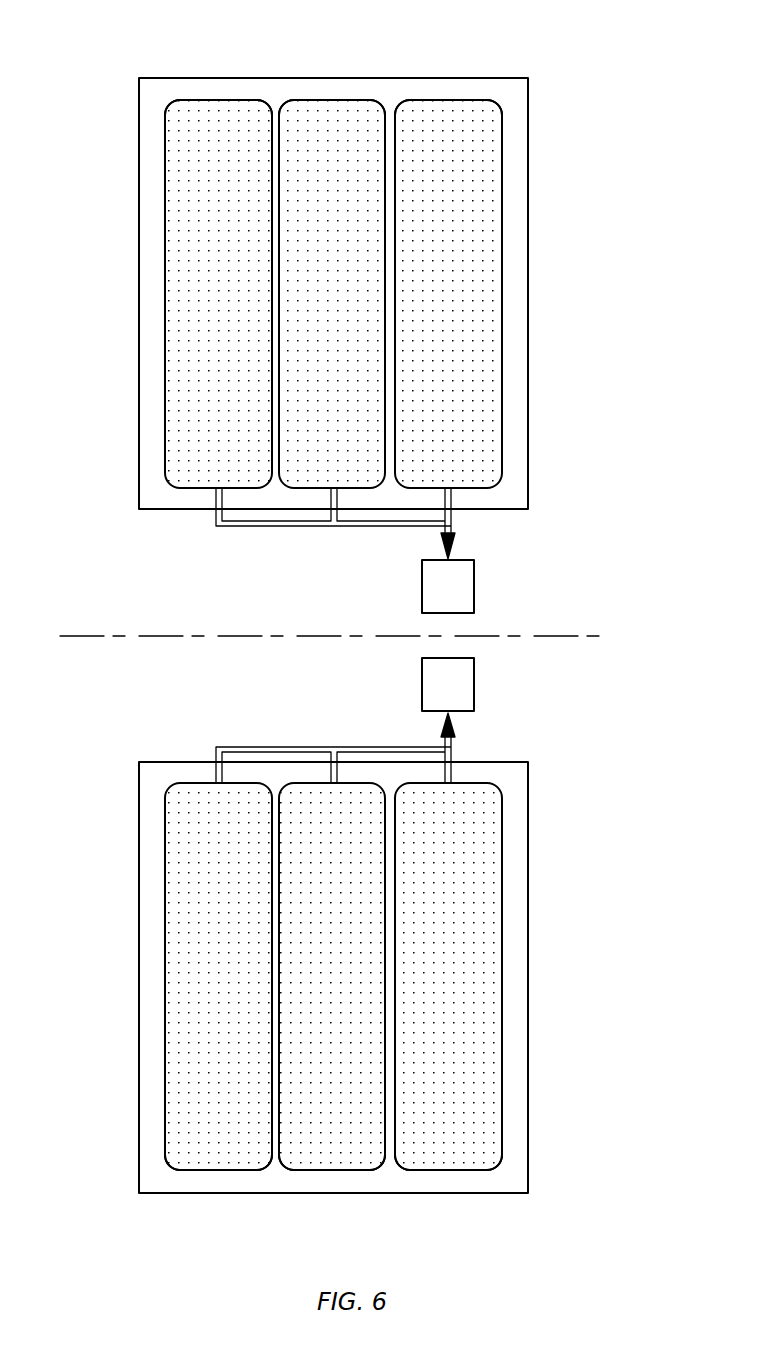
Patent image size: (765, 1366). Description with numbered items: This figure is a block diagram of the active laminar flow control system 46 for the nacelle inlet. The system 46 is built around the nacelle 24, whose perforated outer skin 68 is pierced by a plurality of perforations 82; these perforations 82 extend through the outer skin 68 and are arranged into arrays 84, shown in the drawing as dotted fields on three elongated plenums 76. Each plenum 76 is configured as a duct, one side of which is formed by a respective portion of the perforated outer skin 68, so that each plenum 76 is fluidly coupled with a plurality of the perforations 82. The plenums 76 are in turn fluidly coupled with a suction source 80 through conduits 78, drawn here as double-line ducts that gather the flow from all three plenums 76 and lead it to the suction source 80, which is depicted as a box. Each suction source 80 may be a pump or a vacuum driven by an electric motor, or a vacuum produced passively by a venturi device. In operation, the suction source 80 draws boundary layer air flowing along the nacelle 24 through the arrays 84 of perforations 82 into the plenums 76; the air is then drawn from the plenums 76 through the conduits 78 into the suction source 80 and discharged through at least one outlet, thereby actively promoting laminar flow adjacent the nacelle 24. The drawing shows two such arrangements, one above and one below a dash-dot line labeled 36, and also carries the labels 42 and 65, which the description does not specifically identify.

The active laminar flow control system 46 is at (371, 636).
The nacelle 24 is at (391, 635).
The bipolar plate 42 is at (391, 635).
The outer skin 68 is at (515, 475).
The cathode side plate 65 is at (512, 1160).
The perforations 82 is at (328, 250).
The plenum 76 is at (345, 102).
The array 84 is at (238, 105).
The conduit 78 is at (280, 527).
The suction source 80 is at (474, 583).
The fold / midline 36 is at (580, 636).